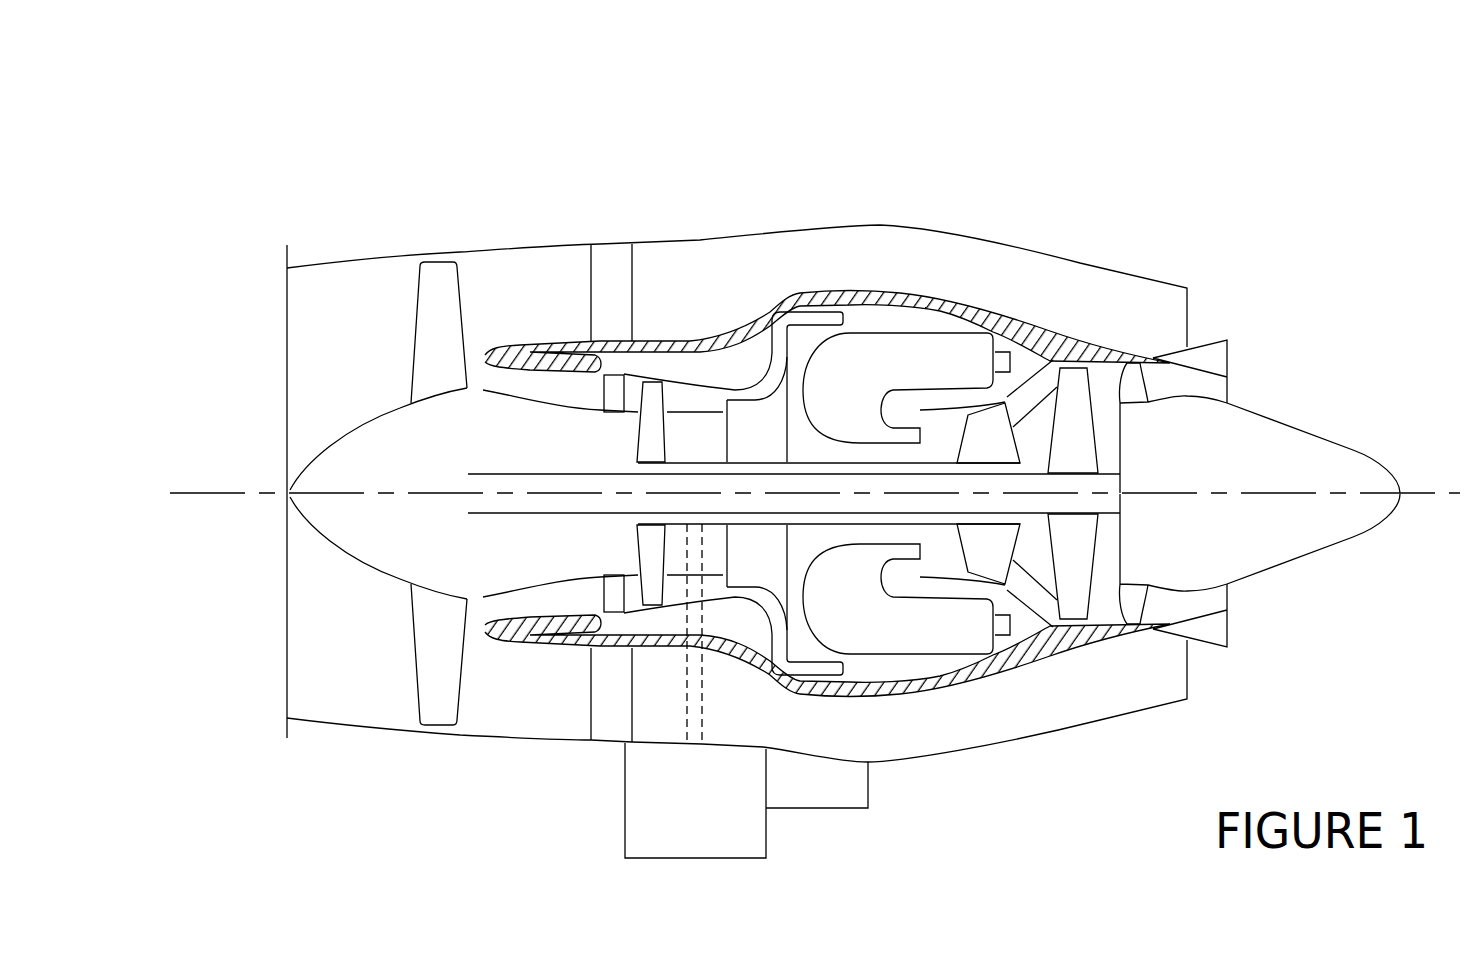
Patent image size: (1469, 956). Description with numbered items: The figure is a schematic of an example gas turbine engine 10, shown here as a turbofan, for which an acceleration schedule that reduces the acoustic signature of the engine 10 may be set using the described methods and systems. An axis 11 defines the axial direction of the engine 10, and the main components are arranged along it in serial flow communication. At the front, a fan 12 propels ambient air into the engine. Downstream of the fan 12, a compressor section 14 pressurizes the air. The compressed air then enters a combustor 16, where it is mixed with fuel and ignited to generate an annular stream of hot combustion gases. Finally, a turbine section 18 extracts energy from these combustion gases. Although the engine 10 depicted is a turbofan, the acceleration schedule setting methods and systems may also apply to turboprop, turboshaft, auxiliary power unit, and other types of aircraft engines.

The gas turbine engine 10 is at (1050, 183).
The axis 11 is at (202, 493).
The fan 12 is at (437, 644).
The compressor section 14 is at (688, 393).
The combustor 16 is at (902, 353).
The turbine section 18 is at (1033, 557).